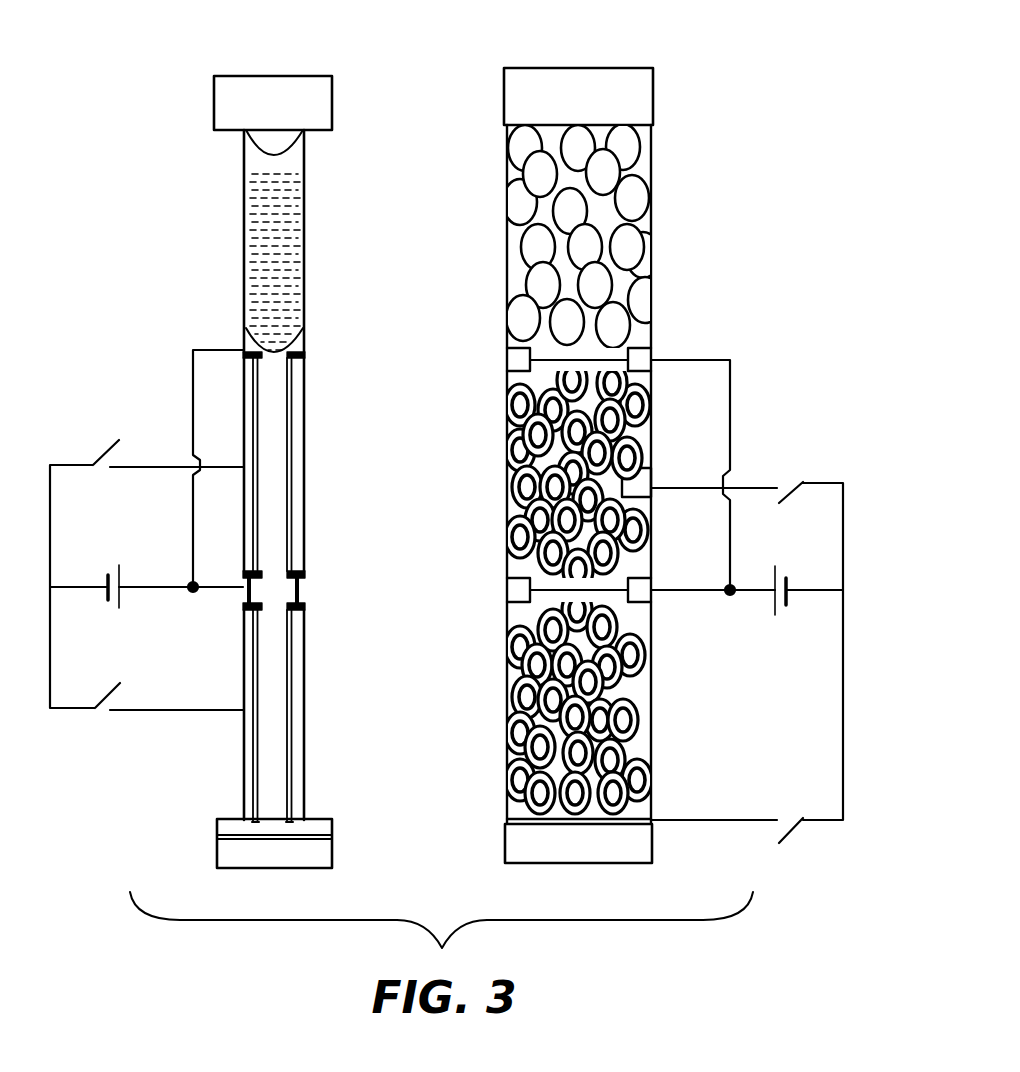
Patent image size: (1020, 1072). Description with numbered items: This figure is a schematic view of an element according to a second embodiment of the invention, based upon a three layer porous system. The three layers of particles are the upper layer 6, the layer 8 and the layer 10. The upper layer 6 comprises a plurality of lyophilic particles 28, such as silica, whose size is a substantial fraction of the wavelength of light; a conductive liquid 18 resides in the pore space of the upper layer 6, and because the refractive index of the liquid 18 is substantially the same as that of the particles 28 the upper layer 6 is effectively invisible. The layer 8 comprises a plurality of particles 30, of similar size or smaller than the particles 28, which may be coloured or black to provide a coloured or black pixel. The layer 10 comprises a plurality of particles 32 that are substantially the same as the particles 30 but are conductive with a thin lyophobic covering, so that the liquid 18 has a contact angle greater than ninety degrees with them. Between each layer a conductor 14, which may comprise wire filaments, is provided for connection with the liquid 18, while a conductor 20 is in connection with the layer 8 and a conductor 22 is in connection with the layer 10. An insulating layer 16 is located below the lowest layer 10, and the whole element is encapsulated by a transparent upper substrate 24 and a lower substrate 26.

The upper layer 6 is at (305, 250).
The layer 8 is at (303, 475).
The layer 10 is at (303, 692).
The conductor 14 is at (305, 345).
The insulating layer 16 is at (507, 800).
The liquid 18 is at (242, 222).
The conductor 20 is at (300, 410).
The conductor 22 is at (297, 752).
The upper substrate 24 is at (214, 105).
The lower substrate 26 is at (217, 852).
The particles 28 is at (523, 192).
The particles 30 is at (651, 410).
The particles 32 is at (632, 725).